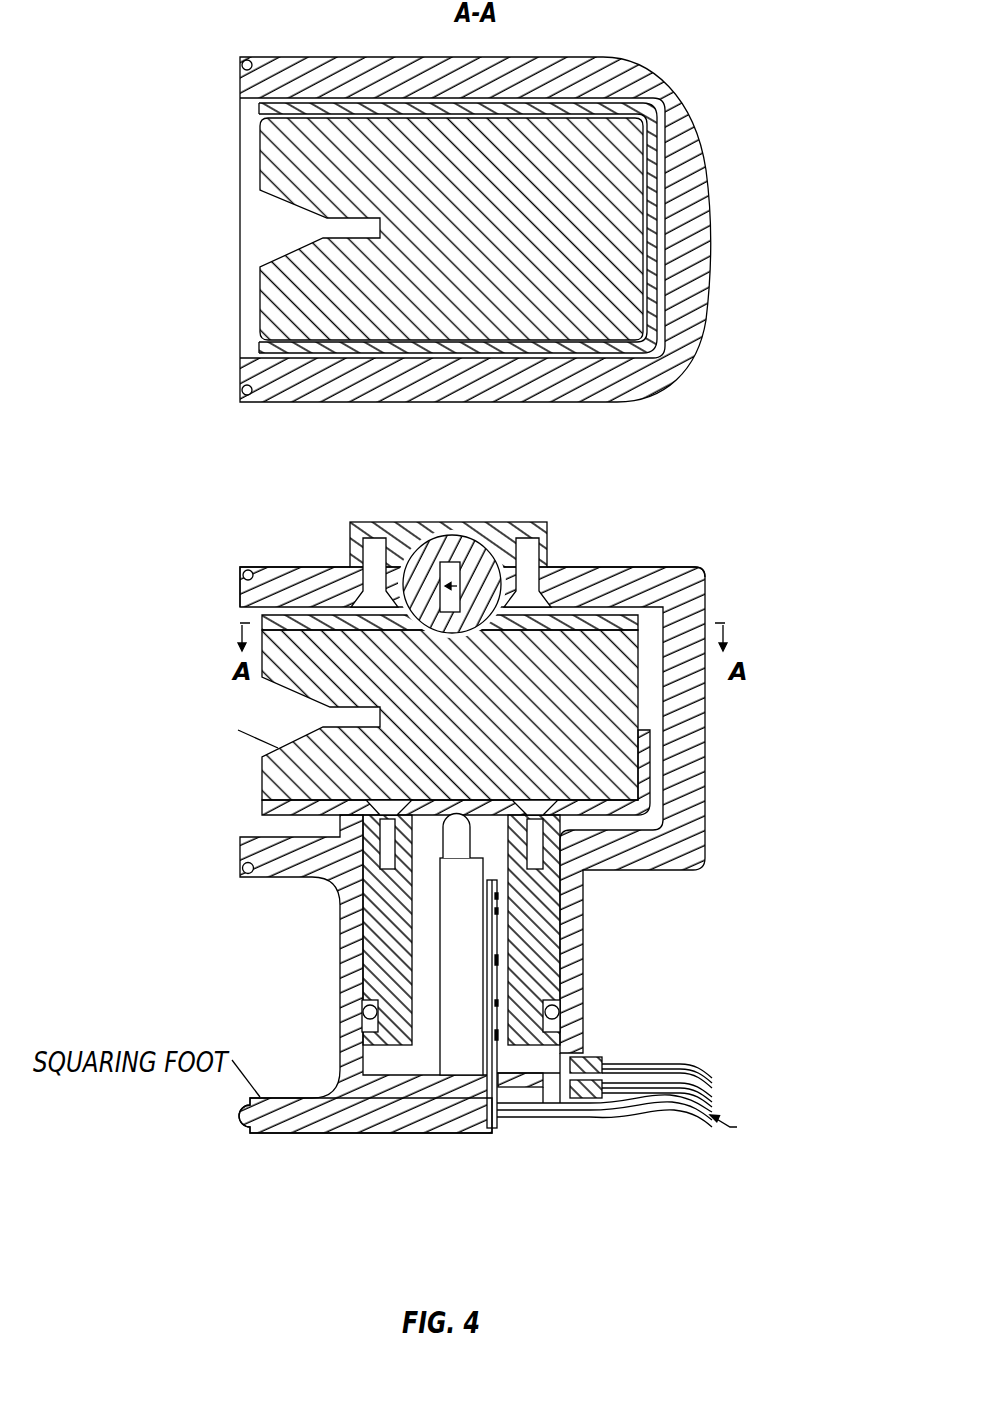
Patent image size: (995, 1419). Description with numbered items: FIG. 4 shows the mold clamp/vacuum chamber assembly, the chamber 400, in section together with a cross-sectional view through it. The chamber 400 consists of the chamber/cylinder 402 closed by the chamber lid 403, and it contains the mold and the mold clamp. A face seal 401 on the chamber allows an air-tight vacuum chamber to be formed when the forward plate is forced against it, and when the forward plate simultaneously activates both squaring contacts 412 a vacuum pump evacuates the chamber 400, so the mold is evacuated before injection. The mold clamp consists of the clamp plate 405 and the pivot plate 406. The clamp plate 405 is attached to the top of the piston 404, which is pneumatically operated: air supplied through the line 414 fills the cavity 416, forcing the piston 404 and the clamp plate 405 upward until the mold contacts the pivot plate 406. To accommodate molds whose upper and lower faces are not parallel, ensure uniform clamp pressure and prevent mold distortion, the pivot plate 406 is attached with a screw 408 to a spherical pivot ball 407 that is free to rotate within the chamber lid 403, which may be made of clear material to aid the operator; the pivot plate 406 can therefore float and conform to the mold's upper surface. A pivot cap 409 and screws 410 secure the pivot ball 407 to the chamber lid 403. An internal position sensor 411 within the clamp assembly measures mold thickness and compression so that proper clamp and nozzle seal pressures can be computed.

The chamber 400 is at (773, 577).
The face seal 401 is at (242, 568).
The chamber/cylinder 402 is at (670, 873).
The chamber lid 403 is at (620, 567).
The piston 404 is at (537, 962).
The clamp plate 405 is at (258, 354).
The pivot plate 406 is at (260, 620).
The spherical pivot ball 407 is at (430, 547).
The screw 408 is at (452, 558).
The pivot cap 409 is at (547, 522).
The screws 410 is at (528, 530).
The internal position sensor 411 is at (448, 937).
The squaring contacts 412 is at (247, 1117).
The line 414 is at (713, 1088).
The cavity 416 is at (427, 975).